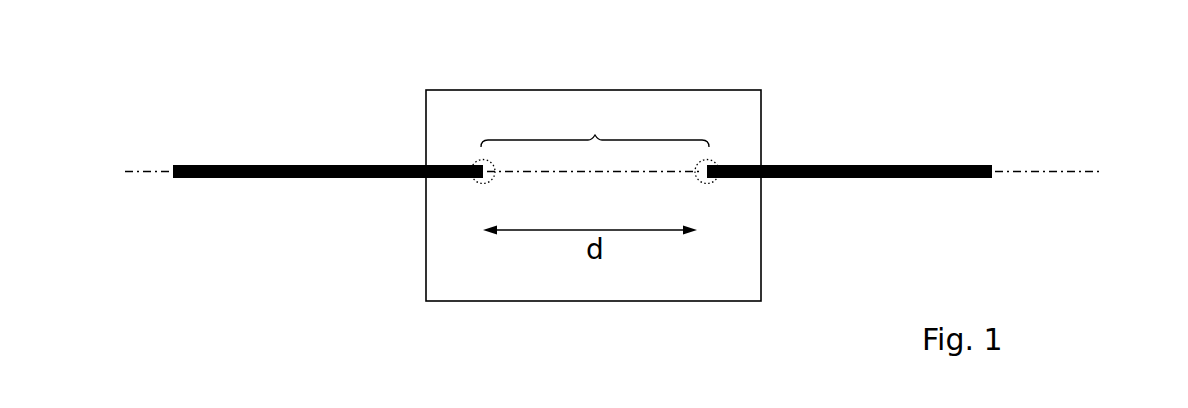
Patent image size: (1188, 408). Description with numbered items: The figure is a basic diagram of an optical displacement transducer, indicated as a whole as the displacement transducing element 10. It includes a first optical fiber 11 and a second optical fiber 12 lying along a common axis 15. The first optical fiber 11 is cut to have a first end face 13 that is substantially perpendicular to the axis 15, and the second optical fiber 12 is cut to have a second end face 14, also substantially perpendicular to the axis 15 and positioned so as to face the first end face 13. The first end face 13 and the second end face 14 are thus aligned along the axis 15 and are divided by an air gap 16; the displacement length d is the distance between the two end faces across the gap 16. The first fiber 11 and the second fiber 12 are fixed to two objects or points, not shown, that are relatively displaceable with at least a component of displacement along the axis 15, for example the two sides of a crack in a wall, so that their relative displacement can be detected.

The displacement transducing element 10 is at (356, 284).
The first optical fiber 11 is at (330, 165).
The second optical fiber 12 is at (917, 164).
The first end face 13 is at (472, 160).
The second end face 14 is at (708, 160).
The axis 15 is at (641, 168).
The air gap 16 is at (595, 124).